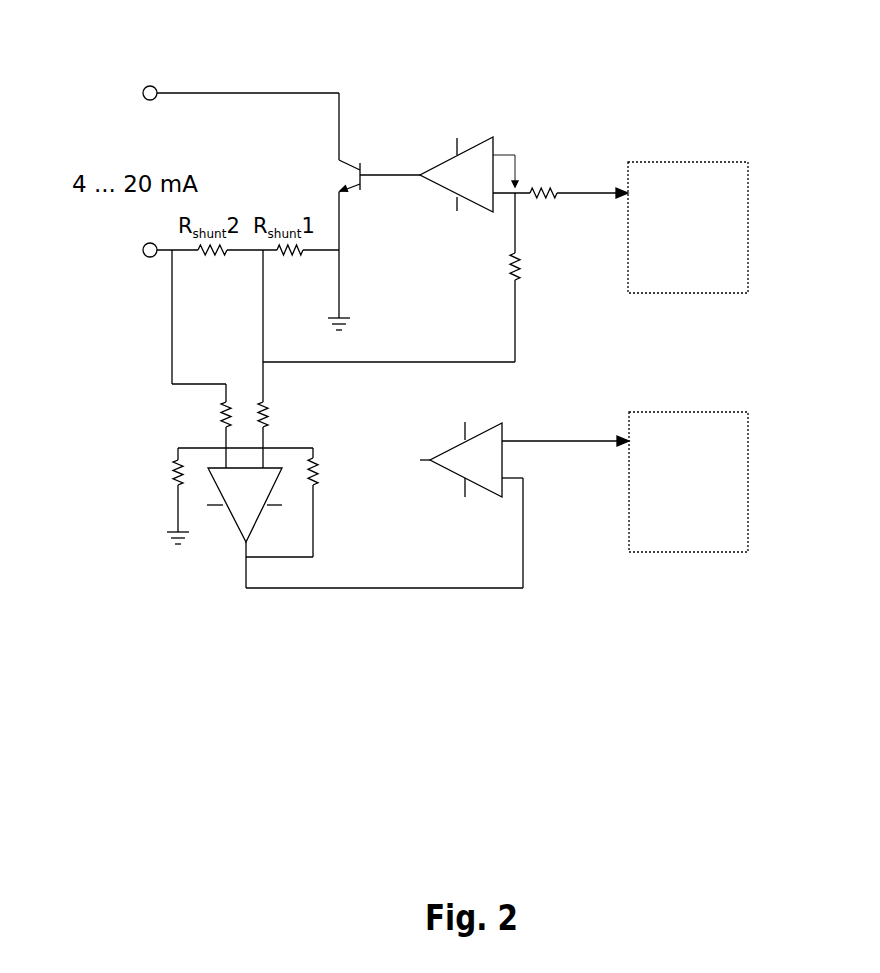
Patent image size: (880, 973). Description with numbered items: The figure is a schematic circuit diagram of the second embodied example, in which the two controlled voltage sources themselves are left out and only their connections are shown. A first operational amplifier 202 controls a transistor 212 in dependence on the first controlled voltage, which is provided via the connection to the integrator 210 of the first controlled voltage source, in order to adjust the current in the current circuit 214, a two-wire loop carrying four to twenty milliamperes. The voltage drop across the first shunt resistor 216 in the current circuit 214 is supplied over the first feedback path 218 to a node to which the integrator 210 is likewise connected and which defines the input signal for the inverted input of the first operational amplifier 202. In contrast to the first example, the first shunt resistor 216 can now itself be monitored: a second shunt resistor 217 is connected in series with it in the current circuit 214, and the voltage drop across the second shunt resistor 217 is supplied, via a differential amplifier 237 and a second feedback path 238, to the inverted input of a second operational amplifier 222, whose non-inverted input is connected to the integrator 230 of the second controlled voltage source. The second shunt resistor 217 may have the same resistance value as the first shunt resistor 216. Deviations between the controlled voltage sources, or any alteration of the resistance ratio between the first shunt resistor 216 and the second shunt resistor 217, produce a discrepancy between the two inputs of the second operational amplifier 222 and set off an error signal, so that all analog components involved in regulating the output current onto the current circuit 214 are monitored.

The current circuit 214 is at (175, 97).
The first shunt resistor 216 is at (293, 200).
The transistor 212 is at (363, 168).
The first operational amplifier 202 is at (480, 152).
The integrator of the first controlled voltage source 210 is at (688, 227).
The first feedback path 218 is at (455, 362).
The second shunt resistor 217 is at (213, 257).
The differential amplifier 237 is at (235, 503).
The second feedback path 238 is at (312, 596).
The second operational amplifier 222 is at (467, 455).
The integrator of the second controlled voltage source 230 is at (688, 482).